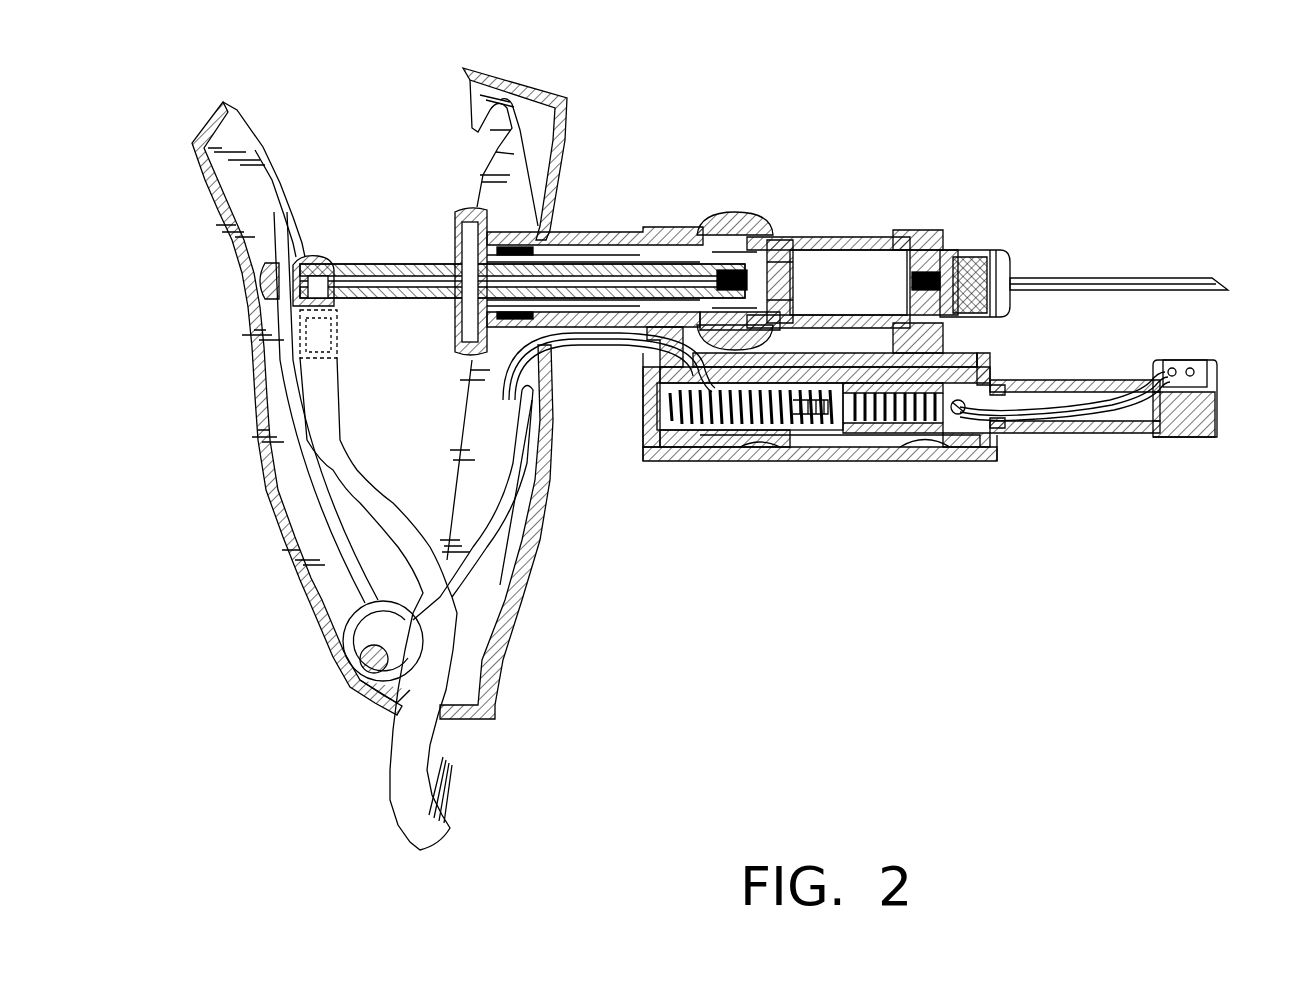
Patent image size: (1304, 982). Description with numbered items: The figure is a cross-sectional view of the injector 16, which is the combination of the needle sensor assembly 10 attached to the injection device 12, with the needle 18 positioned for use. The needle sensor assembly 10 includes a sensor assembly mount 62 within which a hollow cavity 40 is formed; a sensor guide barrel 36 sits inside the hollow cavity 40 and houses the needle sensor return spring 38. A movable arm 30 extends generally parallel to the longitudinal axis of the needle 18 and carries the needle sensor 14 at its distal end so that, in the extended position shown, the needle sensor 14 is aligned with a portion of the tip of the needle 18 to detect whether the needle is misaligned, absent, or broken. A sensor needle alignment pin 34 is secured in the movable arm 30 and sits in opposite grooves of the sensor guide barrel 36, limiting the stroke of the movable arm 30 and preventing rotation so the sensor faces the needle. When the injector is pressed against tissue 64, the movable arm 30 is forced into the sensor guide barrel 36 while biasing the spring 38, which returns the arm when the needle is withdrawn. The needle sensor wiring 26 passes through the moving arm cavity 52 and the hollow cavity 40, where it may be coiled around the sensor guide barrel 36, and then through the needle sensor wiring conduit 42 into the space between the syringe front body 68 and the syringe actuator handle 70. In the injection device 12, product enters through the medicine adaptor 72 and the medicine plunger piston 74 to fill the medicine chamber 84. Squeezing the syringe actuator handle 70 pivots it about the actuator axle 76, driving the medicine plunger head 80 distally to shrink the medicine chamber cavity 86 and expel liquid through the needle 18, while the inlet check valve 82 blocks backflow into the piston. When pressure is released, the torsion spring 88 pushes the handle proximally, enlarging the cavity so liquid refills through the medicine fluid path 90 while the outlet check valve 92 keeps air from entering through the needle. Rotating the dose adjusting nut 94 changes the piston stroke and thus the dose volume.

The needle sensor assembly 10 is at (865, 465).
The injection device 12 is at (862, 265).
The needle sensor 14 is at (1218, 375).
The injector 16 is at (1024, 153).
The needle 18 is at (1088, 278).
The needle sensor wiring 26 is at (1147, 446).
The movable arm 30 is at (1103, 445).
The sensor needle alignment pin 34 is at (950, 462).
The sensor guide barrel 36 is at (782, 455).
The needle sensor return spring 38 is at (903, 455).
The hollow cavity 40 is at (712, 465).
The needle sensor wiring conduit 42 is at (600, 345).
The moving arm cavity 52 is at (1073, 393).
The sensor assembly mount 62 is at (695, 465).
The tissue 64 is at (735, 465).
The syringe front body 68 is at (545, 92).
The syringe actuator handle 70 is at (245, 197).
The medicine adaptor 72 is at (323, 250).
The medicine plunger piston 74 is at (398, 264).
The actuator axle 76 is at (350, 695).
The medicine plunger head 80 is at (790, 232).
The inlet check valve 82 is at (727, 218).
The medicine chamber 84 is at (815, 240).
The medicine chamber cavity 86 is at (893, 238).
The torsion spring 88 is at (527, 520).
The medicine fluid path 90 is at (600, 240).
The outlet check valve 92 is at (927, 242).
The dose adjusting nut 94 is at (462, 208).